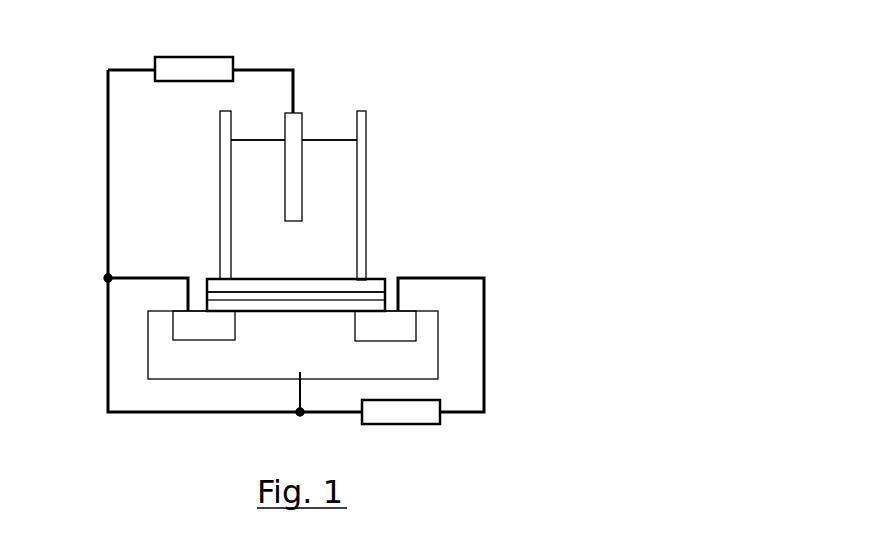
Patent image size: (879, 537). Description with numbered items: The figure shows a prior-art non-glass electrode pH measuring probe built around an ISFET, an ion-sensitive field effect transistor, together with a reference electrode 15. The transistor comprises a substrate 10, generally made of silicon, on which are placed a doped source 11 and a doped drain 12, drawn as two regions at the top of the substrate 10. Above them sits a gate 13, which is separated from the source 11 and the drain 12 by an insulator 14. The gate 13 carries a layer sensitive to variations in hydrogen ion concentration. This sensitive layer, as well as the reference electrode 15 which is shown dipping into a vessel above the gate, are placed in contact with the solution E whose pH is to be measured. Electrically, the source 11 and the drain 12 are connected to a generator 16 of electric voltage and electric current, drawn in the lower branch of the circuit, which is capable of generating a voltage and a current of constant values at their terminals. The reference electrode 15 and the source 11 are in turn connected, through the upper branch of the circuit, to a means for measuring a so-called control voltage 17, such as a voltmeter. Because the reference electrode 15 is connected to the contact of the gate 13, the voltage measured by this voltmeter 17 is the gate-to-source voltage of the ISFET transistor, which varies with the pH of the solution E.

The substrate 10 is at (410, 365).
The doped source 11 is at (198, 327).
The doped drain 12 is at (385, 328).
The gate 13 is at (348, 291).
The insulator 14 is at (213, 298).
The reference electrode 15 is at (293, 125).
The generator 16 is at (428, 418).
The means for measuring a control voltage 17 is at (205, 68).
The solution E is at (330, 185).